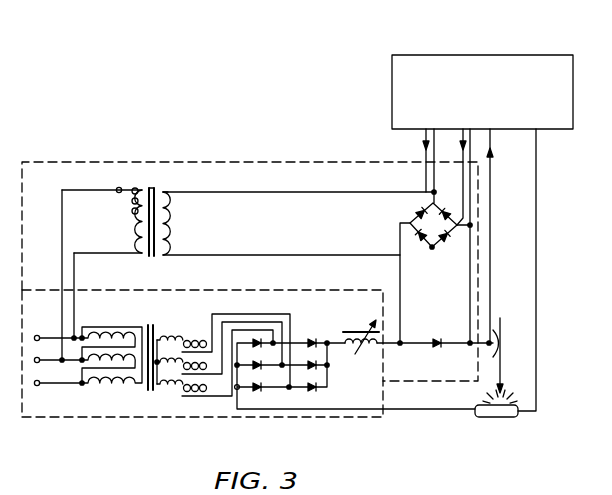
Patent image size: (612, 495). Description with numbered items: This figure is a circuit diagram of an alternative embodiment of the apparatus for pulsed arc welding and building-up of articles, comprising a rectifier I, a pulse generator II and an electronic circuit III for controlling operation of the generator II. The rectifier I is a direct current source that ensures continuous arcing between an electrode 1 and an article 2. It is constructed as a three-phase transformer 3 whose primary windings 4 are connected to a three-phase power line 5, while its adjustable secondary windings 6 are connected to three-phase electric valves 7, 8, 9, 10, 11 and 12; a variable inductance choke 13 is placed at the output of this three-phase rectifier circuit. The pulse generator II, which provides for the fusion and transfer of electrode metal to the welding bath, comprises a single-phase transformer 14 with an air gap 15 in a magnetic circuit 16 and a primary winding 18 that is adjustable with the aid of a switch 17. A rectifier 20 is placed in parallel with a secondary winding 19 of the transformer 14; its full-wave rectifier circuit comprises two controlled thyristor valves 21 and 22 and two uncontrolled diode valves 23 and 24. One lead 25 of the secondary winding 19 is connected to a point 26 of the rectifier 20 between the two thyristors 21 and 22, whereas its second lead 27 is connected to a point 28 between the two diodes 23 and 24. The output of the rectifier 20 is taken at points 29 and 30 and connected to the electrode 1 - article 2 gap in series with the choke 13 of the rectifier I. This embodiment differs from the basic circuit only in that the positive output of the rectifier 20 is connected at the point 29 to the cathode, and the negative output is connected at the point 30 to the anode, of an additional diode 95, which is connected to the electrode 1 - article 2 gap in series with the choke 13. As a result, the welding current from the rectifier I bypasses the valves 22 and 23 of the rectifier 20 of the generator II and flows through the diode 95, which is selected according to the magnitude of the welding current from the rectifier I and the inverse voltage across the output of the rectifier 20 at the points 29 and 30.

The electrode 1 is at (503, 357).
The article 2 is at (497, 420).
The three-phase transformer 3 is at (145, 385).
The primary windings 4 is at (111, 341).
The three-phase power line 5 is at (53, 360).
The adjustable secondary windings 6 is at (222, 350).
The three-phase electric valve 7 is at (258, 348).
The three-phase electric valve 8 is at (260, 370).
The three-phase electric valve 9 is at (261, 392).
The three-phase electric valve 10 is at (311, 341).
The three-phase electric valve 11 is at (320, 366).
The three-phase electric valve 12 is at (322, 389).
The variable inductance choke 13 is at (353, 330).
The single-phase transformer 14 is at (151, 257).
The air gap 15 is at (167, 192).
The magnetic circuit 16 is at (150, 199).
The switch 17 is at (119, 188).
The primary winding 18 is at (132, 226).
The secondary winding 19 is at (171, 219).
The rectifier 20 is at (425, 231).
The controlled thyristor valve 21 is at (416, 213).
The controlled thyristor valve 22 is at (447, 208).
The uncontrolled diode valve 23 is at (421, 241).
The uncontrolled diode valve 24 is at (447, 239).
The lead 25 is at (275, 193).
The point 26 is at (427, 200).
The second lead 27 is at (234, 255).
The point 28 is at (434, 250).
The point 29 is at (471, 225).
The point 30 is at (404, 228).
The additional diode 95 is at (437, 340).
The rectifier I is at (16, 307).
The pulse generator II is at (47, 157).
The electronic circuit III is at (392, 98).